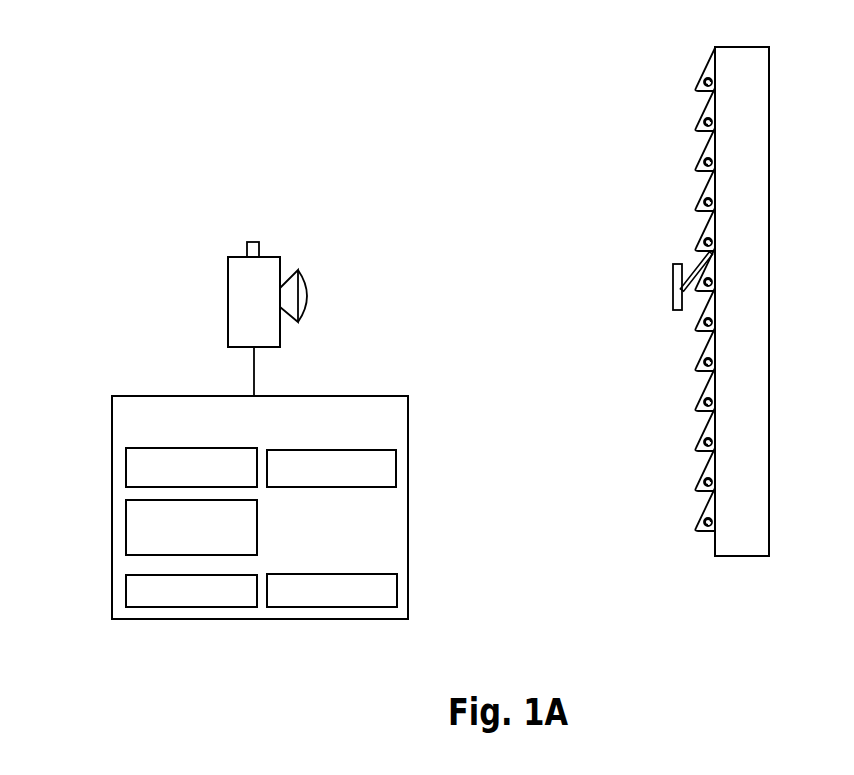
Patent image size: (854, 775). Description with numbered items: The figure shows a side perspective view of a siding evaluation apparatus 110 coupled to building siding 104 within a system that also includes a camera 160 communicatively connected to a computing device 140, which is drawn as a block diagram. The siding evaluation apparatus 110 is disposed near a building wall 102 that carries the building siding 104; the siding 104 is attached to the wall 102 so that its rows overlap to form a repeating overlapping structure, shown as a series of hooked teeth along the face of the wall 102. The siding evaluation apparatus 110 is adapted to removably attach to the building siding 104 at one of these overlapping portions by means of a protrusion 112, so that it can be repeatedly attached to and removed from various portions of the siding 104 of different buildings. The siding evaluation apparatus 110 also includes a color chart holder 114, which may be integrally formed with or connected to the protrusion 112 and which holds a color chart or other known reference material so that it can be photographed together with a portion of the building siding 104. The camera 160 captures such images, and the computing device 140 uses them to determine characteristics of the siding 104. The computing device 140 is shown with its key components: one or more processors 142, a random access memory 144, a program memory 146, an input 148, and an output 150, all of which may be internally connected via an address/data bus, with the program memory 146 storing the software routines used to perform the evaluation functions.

The building wall 102 is at (748, 47).
The building siding 104 is at (702, 70).
The siding evaluation apparatus 110 is at (649, 263).
The protrusion 112 is at (695, 268).
The color chart holder 114 is at (678, 312).
The computing device 140 is at (383, 396).
The processor 142 is at (126, 462).
The random access memory 144 is at (396, 468).
The program memory 146 is at (126, 523).
The input 148 is at (126, 588).
The output 150 is at (397, 587).
The camera 160 is at (240, 257).